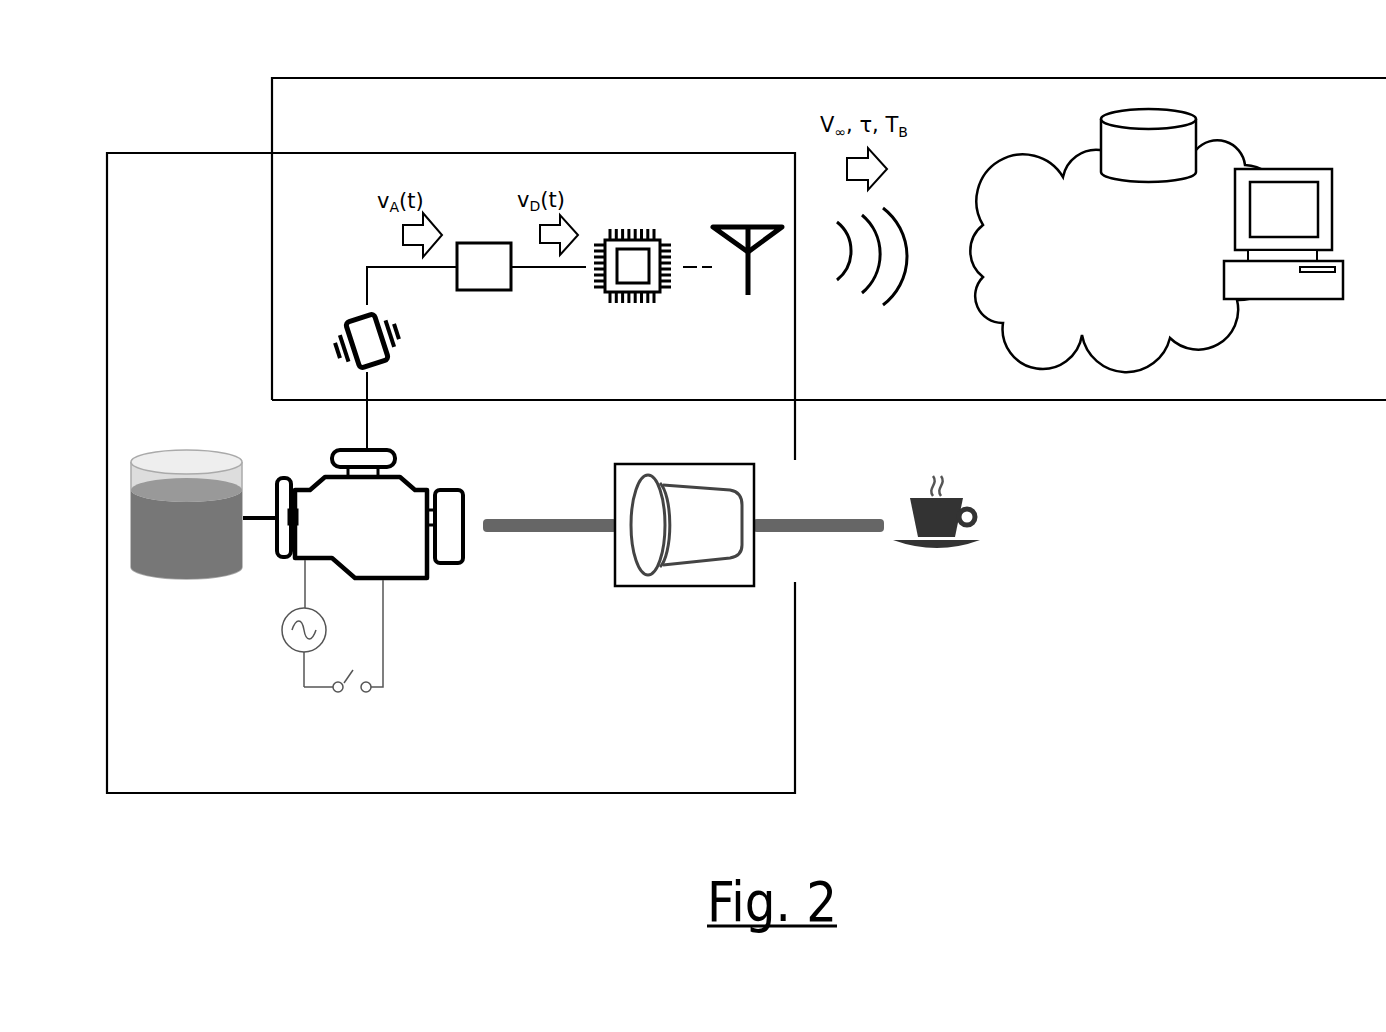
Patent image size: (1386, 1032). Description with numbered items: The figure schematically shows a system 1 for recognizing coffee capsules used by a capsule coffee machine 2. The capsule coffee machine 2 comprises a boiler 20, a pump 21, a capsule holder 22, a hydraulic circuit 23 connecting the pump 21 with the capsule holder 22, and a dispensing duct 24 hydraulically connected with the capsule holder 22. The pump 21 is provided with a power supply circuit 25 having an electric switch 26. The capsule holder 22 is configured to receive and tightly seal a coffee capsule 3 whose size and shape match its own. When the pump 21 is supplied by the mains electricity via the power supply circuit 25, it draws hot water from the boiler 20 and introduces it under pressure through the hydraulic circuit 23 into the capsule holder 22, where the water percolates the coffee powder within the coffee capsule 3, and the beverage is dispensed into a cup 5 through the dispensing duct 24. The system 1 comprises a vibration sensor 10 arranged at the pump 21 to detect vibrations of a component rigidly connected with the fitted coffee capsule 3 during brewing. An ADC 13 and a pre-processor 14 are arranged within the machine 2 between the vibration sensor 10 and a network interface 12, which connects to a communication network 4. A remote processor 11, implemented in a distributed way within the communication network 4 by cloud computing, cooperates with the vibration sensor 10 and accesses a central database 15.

The system 1 is at (837, 77).
The capsule coffee machine 2 is at (450, 797).
The coffee capsule 3 is at (695, 560).
The communication network 4 is at (1033, 163).
The cup 5 is at (933, 553).
The vibration sensor 10 is at (353, 317).
The processor 11 is at (1284, 168).
The network interface 12 is at (745, 222).
The ADC 13 is at (483, 241).
The pre-processor 14 is at (632, 220).
The central database 15 is at (1148, 183).
The boiler 20 is at (182, 447).
The pump 21 is at (412, 483).
The capsule holder 22 is at (685, 465).
The hydraulic circuit 23 is at (550, 522).
The dispensing duct 24 is at (837, 518).
The power supply circuit 25 is at (268, 645).
The electric switch 26 is at (349, 706).